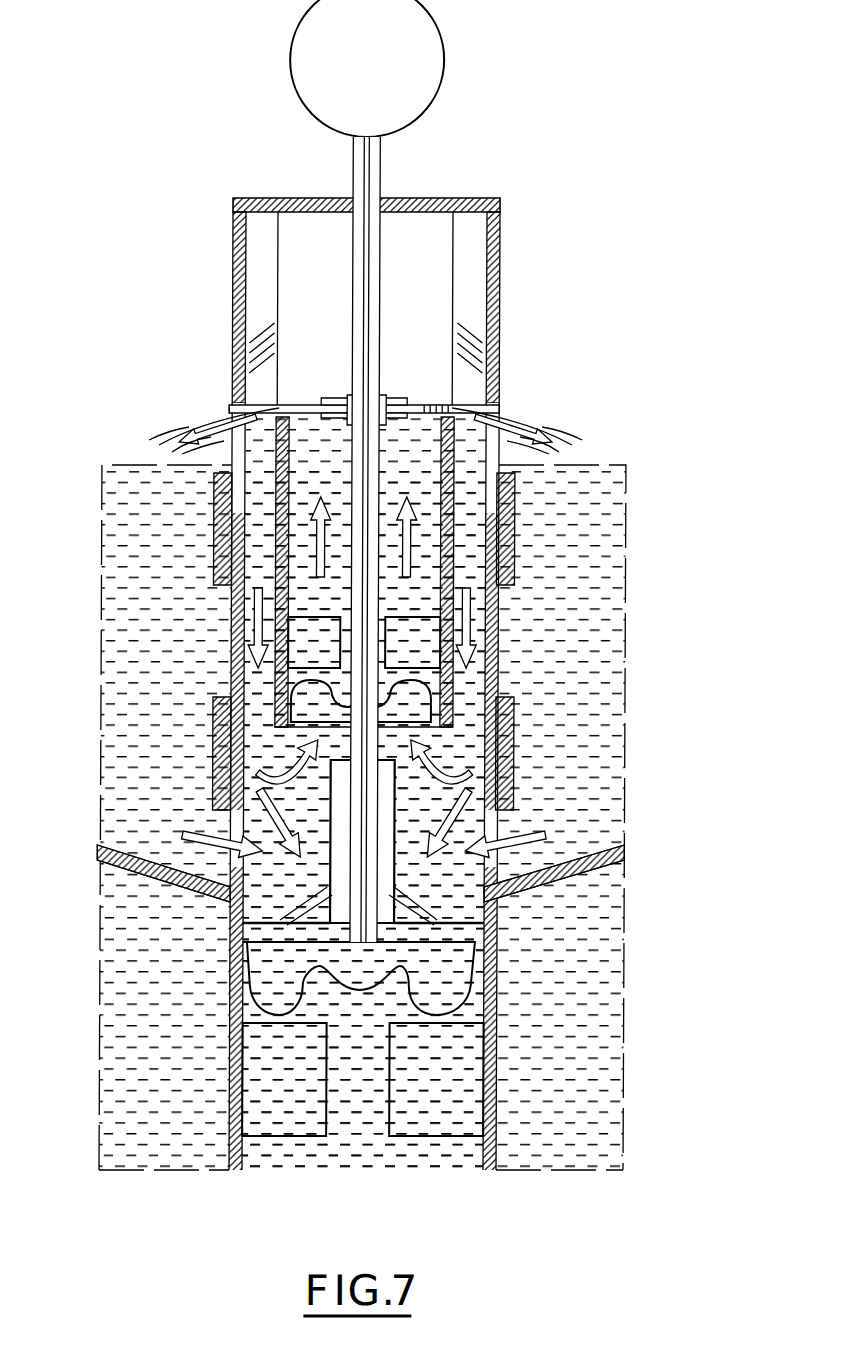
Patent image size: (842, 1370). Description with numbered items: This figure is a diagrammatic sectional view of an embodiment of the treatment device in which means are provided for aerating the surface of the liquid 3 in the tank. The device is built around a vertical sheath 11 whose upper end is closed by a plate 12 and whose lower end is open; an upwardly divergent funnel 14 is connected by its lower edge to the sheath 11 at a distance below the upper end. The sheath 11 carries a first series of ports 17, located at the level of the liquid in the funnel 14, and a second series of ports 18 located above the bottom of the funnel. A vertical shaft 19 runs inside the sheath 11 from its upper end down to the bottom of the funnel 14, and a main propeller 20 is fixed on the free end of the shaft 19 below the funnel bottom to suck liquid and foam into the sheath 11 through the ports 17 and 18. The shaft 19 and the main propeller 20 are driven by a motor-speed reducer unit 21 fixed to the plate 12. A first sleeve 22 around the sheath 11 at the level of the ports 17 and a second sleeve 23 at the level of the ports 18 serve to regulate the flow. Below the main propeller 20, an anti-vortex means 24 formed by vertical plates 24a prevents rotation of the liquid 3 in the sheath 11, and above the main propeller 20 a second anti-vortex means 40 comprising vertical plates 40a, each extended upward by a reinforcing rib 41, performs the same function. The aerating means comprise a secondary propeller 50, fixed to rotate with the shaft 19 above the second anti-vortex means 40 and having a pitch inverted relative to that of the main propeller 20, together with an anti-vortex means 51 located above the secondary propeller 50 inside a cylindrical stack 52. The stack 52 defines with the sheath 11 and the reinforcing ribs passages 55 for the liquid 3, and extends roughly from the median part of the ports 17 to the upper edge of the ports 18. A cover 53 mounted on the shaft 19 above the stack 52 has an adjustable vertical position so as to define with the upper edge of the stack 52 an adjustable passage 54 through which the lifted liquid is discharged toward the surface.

The liquid 3 is at (593, 527).
The vertical sheath 11 is at (490, 1173).
The plate 12 is at (422, 199).
The upwardly divergent funnel 14 is at (627, 863).
The first series of ports 17 is at (500, 410).
The second series of ports 18 is at (495, 823).
The vertical shaft 19 is at (365, 337).
The main propeller 20 is at (450, 980).
The motor-speed reducer unit 21 is at (435, 104).
The first sleeve 22 is at (283, 513).
The second sleeve 23 is at (228, 742).
The anti-vortex means 24 is at (250, 1109).
The vertical plates 24a is at (445, 1103).
The second anti-vortex means 40 is at (243, 948).
The vertical plates 40a is at (227, 853).
The reinforcing rib 41 is at (258, 285).
The secondary propeller 50 is at (425, 706).
The anti-vortex means 51 is at (313, 642).
The cylindrical stack 52 is at (283, 553).
The cover 53 is at (314, 400).
The adjustable passage 54 is at (278, 405).
The passages 55 is at (462, 568).